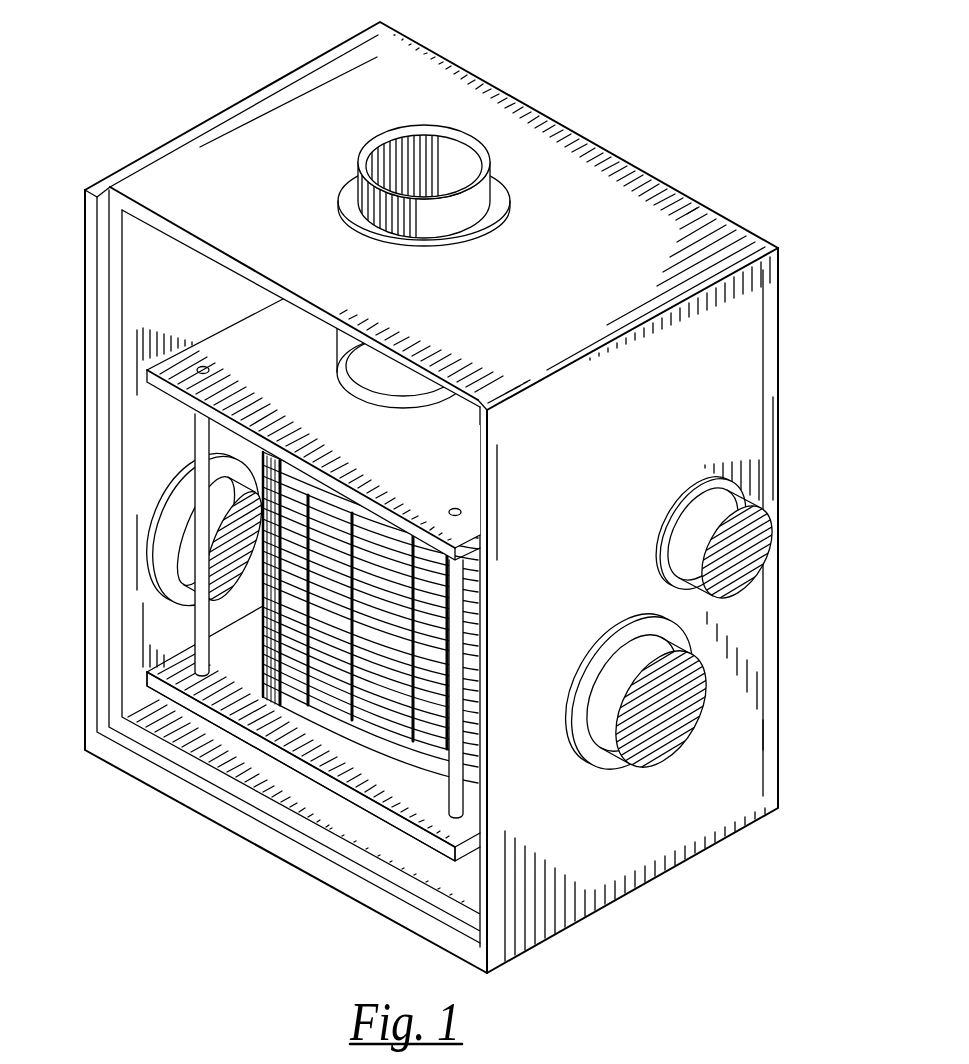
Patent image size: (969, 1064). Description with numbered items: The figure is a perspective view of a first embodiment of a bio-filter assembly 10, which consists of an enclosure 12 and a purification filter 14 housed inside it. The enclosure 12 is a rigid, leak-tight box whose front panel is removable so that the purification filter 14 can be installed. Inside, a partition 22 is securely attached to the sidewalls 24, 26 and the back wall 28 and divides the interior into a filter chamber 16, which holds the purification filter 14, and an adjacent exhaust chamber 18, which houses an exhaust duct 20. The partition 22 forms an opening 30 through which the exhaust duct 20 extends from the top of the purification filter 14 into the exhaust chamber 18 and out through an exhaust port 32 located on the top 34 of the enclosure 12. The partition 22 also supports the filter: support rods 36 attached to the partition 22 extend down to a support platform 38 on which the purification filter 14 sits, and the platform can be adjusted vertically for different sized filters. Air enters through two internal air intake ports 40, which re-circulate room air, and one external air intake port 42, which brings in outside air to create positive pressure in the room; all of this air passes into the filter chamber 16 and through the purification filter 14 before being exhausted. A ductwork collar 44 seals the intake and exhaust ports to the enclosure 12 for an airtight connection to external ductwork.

The bio-filter assembly 10 is at (134, 78).
The enclosure 12 is at (240, 104).
The purification filter 14 is at (283, 718).
The filter chamber 16 is at (215, 600).
The exhaust chamber 18 is at (207, 323).
The exhaust duct 20 is at (337, 360).
The partition 22 is at (194, 413).
The sidewall 24 is at (132, 243).
The sidewall 26 is at (748, 793).
The back wall 28 is at (642, 165).
The opening 30 is at (337, 340).
The exhaust port 32 is at (430, 197).
The top 34 is at (727, 242).
The support rods 36 is at (202, 658).
The support platform 38 is at (350, 795).
The internal air intake ports 40 is at (183, 538).
The external air intake port 42 is at (728, 545).
The ductwork collar 44 is at (606, 766).